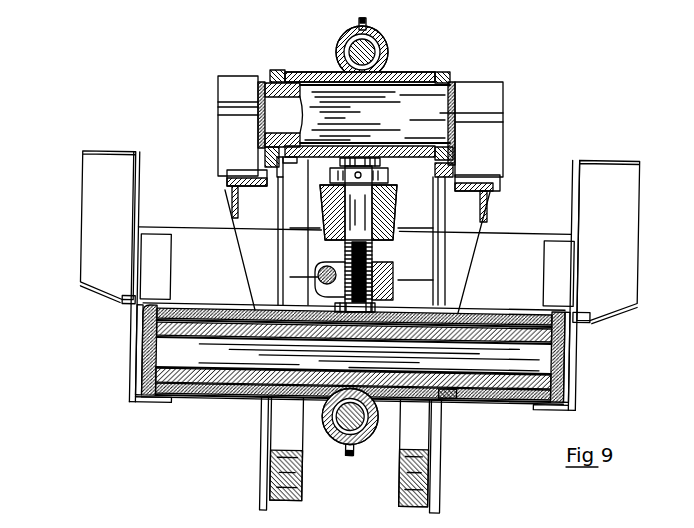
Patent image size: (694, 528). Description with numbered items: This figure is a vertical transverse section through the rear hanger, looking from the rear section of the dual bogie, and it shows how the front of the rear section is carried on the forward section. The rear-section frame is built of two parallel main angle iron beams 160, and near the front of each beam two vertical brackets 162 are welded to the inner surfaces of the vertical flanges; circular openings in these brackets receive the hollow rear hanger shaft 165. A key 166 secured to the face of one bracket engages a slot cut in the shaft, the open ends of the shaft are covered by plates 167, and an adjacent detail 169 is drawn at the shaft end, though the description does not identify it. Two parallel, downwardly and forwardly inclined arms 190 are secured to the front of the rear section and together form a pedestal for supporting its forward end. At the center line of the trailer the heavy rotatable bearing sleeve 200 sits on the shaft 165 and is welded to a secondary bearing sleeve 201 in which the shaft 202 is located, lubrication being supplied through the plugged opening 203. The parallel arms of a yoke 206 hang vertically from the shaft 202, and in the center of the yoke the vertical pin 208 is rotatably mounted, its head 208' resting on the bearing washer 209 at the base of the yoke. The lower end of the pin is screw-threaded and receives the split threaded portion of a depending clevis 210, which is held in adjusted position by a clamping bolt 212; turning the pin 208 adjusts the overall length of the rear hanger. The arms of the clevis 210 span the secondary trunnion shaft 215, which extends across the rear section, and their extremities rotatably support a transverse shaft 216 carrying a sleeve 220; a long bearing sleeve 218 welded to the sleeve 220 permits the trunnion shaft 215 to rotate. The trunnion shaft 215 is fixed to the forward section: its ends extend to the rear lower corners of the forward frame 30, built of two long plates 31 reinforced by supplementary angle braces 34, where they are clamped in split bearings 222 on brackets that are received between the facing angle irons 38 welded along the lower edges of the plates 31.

The frame 30 is at (577, 400).
The plate 31 is at (128, 393).
The supplementary angle brace 34 is at (92, 214).
The angle iron 38 is at (136, 320).
The main angle iron beam 160 is at (266, 160).
The vertical bracket 162 is at (270, 72).
The rear hanger shaft 165 is at (502, 84).
The key 166 is at (265, 78).
The plate 167 is at (258, 100).
The bore 169 is at (445, 113).
The arm 190 is at (262, 418).
The rotatable bearing sleeve 200 is at (400, 74).
The secondary bearing sleeve 201 is at (395, 55).
The shaft 202 is at (348, 45).
The plugged opening 203 is at (366, 22).
The yoke 206 is at (398, 228).
The vertical pin 208 is at (427, 239).
The head 208' is at (506, 138).
The bearing washer 209 is at (388, 176).
The clevis 210 is at (573, 310).
The clamping bolt 212 is at (318, 273).
The secondary trunnion shaft 215 is at (546, 363).
The transverse shaft 216 is at (368, 417).
The bearing sleeve 218 is at (453, 387).
The sleeve 220 is at (352, 449).
The split bearing 222 is at (190, 398).